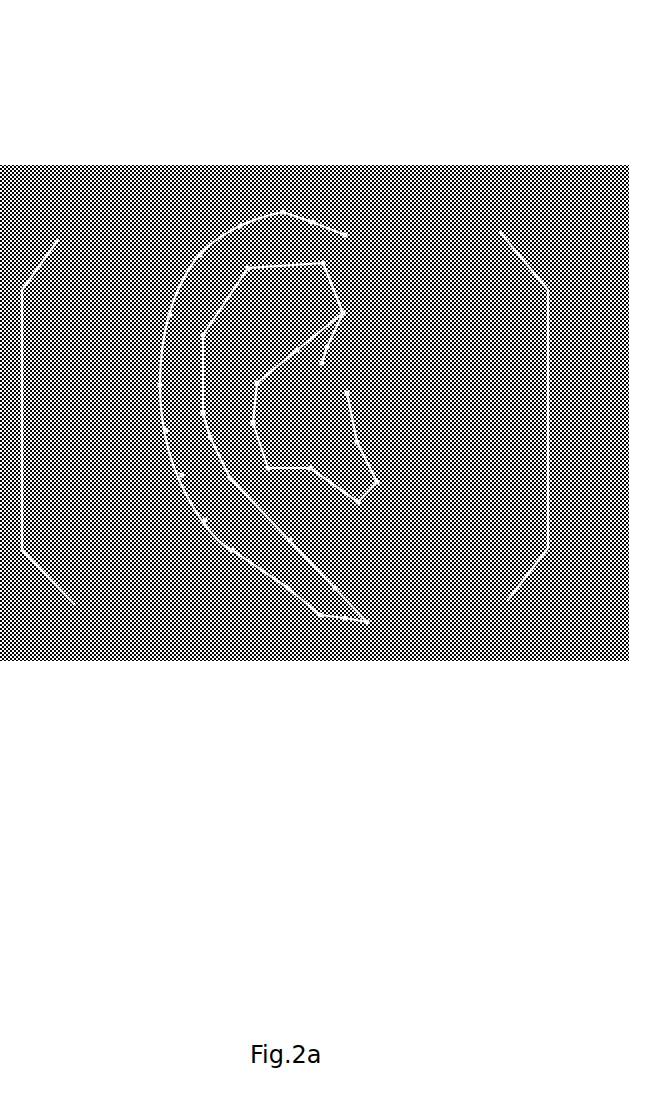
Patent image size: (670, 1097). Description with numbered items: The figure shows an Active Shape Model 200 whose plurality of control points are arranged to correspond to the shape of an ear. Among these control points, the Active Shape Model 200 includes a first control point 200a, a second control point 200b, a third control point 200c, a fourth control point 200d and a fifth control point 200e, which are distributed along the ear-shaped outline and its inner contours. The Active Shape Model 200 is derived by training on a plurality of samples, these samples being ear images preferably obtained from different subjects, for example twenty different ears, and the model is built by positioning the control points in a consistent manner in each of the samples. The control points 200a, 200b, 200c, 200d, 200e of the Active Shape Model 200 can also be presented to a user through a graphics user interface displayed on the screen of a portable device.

The Active Shape Model 200 is at (259, 431).
The first control point 200a is at (348, 393).
The second control point 200b is at (232, 553).
The third control point 200c is at (161, 330).
The fourth control point 200d is at (215, 232).
The fifth control point 200e is at (283, 205).